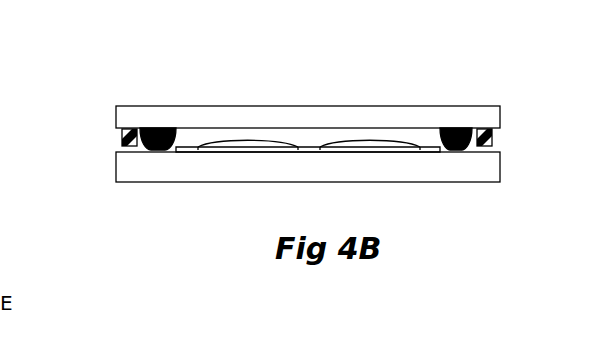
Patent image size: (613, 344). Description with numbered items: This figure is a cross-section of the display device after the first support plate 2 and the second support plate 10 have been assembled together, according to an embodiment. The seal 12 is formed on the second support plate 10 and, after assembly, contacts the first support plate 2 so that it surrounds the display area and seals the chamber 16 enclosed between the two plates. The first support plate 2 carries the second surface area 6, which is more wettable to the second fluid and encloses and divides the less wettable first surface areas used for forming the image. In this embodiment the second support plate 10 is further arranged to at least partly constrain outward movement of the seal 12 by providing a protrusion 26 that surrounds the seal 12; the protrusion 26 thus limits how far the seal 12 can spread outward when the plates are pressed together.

The second support plate 10 is at (116, 118).
The first support plate 2 is at (116, 170).
The second surface area 6 is at (157, 127).
The seal 12 is at (458, 127).
The protrusion 26 is at (122, 137).
The chamber 16 is at (309, 137).